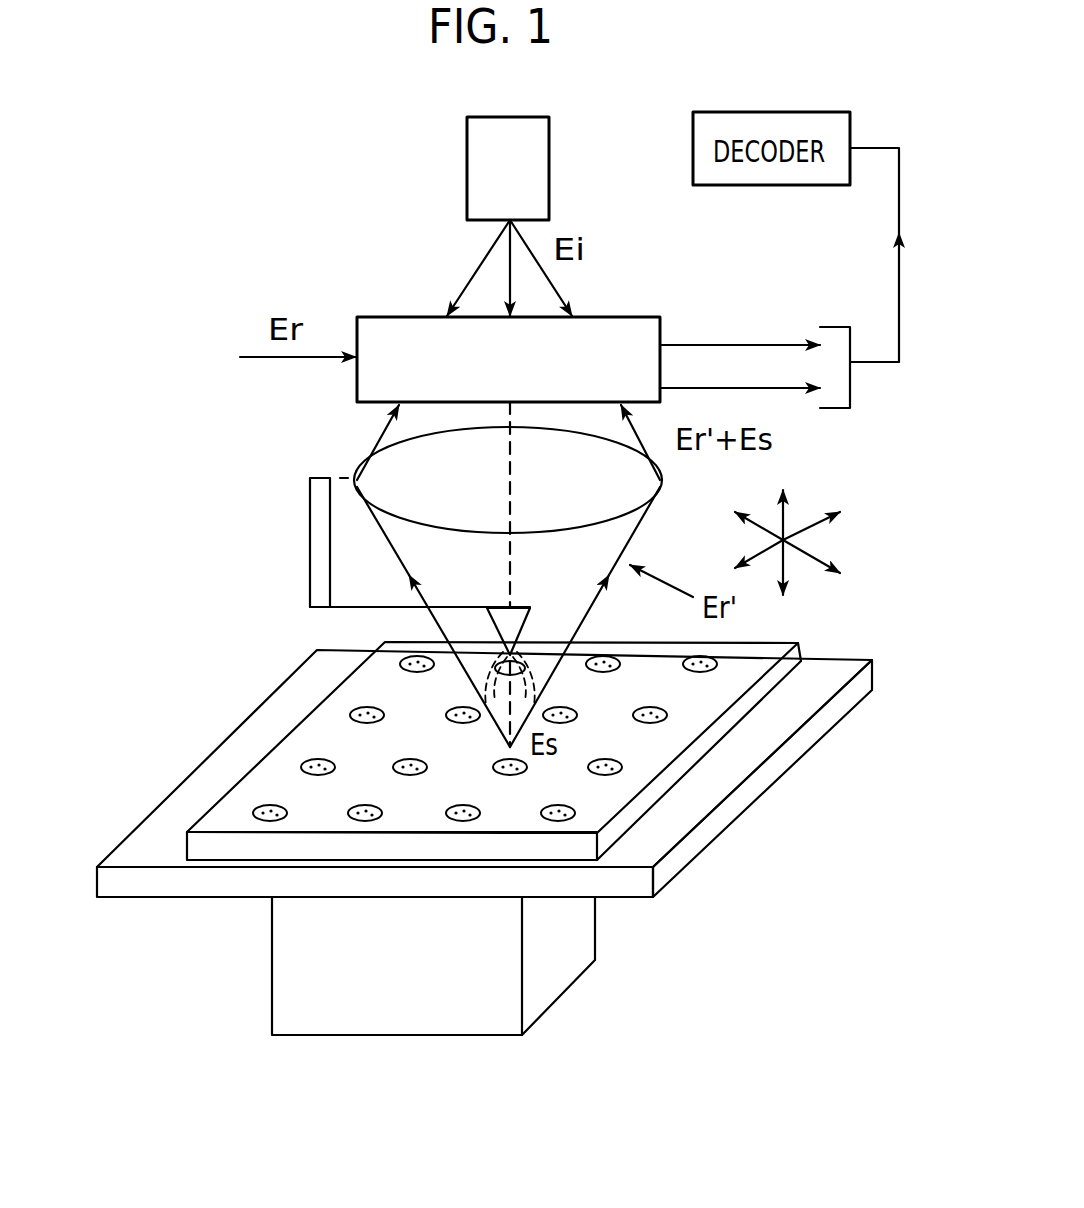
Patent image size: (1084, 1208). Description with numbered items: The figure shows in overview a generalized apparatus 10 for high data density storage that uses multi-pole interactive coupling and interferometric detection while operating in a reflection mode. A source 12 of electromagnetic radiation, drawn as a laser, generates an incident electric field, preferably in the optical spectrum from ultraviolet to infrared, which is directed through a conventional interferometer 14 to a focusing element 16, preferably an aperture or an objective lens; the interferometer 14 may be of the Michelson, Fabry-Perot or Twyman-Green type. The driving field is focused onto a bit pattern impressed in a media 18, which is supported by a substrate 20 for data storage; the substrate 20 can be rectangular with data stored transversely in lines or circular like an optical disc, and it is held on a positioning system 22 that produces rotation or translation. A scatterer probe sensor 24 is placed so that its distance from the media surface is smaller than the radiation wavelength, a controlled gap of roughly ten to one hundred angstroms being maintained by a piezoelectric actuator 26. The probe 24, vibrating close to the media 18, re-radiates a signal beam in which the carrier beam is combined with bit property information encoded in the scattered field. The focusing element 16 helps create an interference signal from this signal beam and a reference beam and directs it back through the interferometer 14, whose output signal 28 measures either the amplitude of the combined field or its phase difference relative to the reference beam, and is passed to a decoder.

The apparatus 10 is at (348, 250).
The source of electromagnetic radiation 12 is at (467, 146).
The interferometer 14 is at (612, 318).
The focusing element 16 is at (662, 490).
The media 18 is at (345, 740).
The substrate 20 is at (193, 842).
The positioning system 22 is at (282, 966).
The scatterer probe sensor 24 is at (500, 614).
The piezoelectric actuator 26 is at (312, 540).
The output signal 28 is at (779, 285).